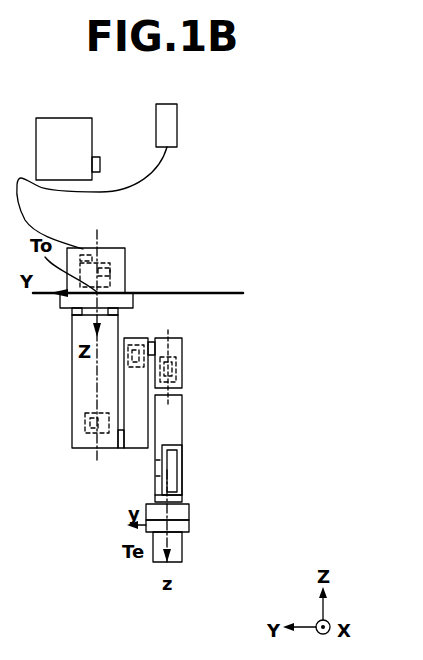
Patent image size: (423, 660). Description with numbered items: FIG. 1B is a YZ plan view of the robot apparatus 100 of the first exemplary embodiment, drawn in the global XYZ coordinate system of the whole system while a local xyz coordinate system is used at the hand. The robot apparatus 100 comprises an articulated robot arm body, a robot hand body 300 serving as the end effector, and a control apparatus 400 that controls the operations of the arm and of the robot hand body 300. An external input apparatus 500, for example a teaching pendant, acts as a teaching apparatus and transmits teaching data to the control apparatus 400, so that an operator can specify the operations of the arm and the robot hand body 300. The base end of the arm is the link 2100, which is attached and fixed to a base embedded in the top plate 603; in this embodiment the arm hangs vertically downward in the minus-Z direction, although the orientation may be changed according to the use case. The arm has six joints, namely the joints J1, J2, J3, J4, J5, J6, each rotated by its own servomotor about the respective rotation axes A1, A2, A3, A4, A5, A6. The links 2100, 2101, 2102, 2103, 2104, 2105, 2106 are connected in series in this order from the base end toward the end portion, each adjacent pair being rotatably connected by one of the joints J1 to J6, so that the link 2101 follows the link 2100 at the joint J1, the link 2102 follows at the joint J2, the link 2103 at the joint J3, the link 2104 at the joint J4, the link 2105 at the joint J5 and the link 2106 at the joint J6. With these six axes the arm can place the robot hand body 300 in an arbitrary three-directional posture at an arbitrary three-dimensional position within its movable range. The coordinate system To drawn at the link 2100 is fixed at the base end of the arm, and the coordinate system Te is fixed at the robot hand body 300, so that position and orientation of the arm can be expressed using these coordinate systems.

The robot apparatus 100 is at (295, 98).
The control apparatus 400 is at (66, 118).
The external input apparatus 500 is at (177, 123).
The top plate 603 is at (206, 283).
The link 2100 is at (125, 299).
The link 2101 is at (82, 380).
The link 2102 is at (140, 449).
The link 2103 is at (190, 340).
The link 2104 is at (175, 408).
The link 2105 is at (175, 485).
The link 2106 is at (188, 510).
The robot hand body 300 is at (200, 575).
The rotation axis A1 is at (95, 334).
The rotation axis A2 is at (110, 424).
The rotation axis A3 is at (182, 357).
The rotation axis A4 is at (173, 359).
The rotation axis A5 is at (142, 467).
The rotation axis A6 is at (190, 530).
The joint J1 is at (75, 315).
The joint J2 is at (120, 450).
The joint J3 is at (148, 340).
The joint J4 is at (182, 392).
The joint J5 is at (182, 457).
The joint J6 is at (183, 502).